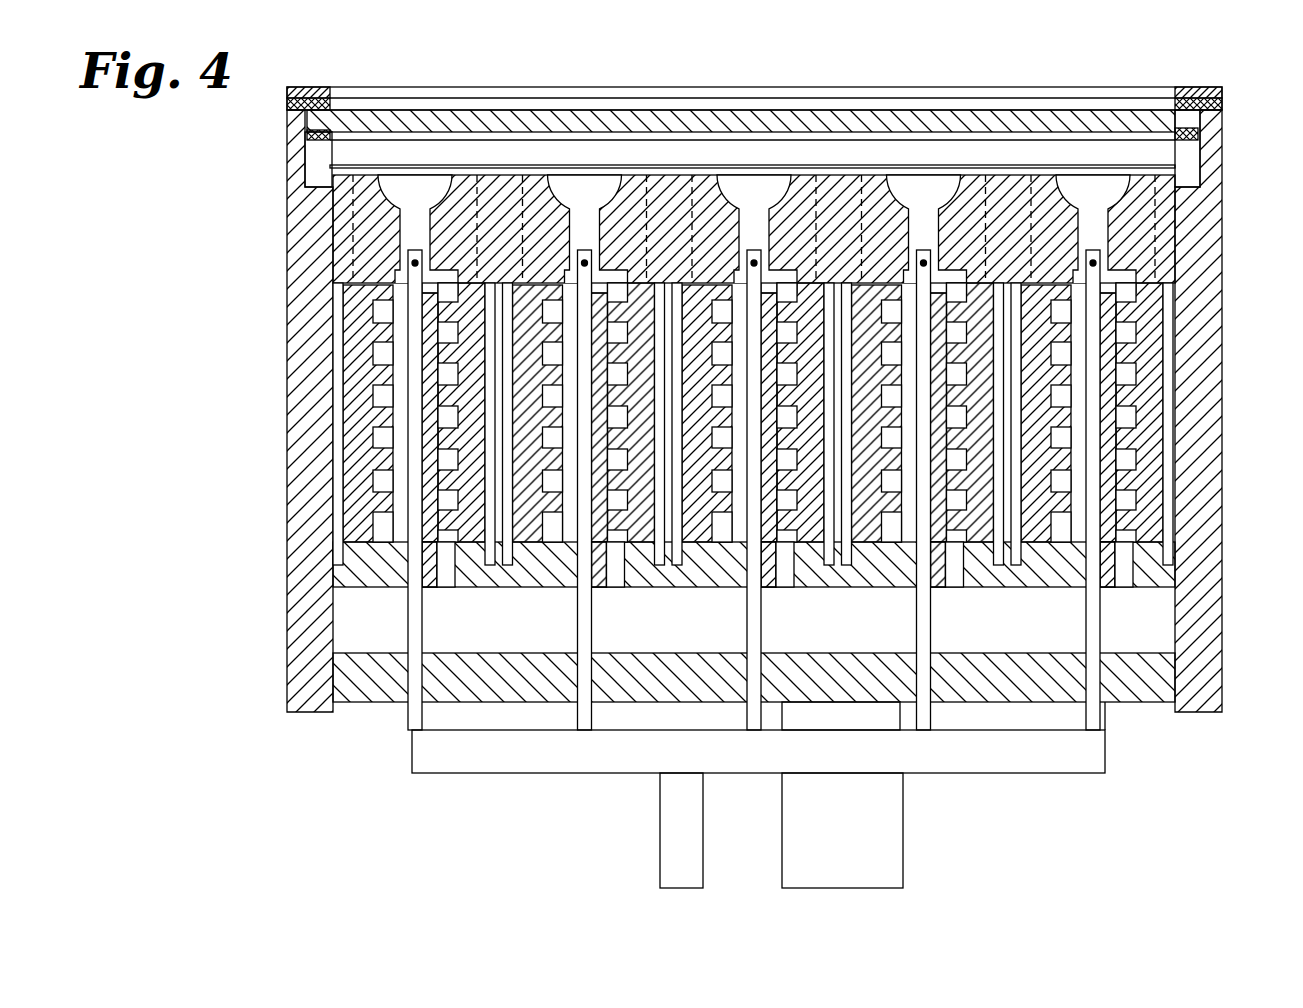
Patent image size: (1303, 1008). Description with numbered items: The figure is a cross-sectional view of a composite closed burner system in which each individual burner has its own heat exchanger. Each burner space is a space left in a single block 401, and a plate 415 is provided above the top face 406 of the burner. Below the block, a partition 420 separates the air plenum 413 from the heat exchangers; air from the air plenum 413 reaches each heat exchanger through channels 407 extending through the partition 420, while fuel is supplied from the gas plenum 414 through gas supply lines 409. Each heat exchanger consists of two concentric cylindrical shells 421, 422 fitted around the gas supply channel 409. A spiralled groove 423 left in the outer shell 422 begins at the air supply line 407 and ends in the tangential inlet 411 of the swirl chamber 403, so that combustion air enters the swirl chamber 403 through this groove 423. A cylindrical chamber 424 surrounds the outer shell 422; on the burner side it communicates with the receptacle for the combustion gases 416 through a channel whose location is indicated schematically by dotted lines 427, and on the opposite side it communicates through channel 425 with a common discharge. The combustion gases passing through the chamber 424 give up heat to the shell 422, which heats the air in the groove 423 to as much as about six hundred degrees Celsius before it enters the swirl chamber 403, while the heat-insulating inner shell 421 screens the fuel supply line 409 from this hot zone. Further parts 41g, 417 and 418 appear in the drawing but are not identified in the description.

The block 401 is at (365, 195).
The plate 415 is at (418, 117).
The top face 406 is at (823, 173).
The receptacle for the combustion gases 416 is at (775, 164).
The dotted lines 427 is at (337, 214).
The swirl chamber 403 is at (1130, 272).
The tangential inlet 411 is at (1130, 292).
The spiralled groove 423 is at (1060, 352).
The housing wall 41g is at (340, 438).
The cylindrical chamber 424 is at (1018, 447).
The cylindrical shell 421 is at (1112, 482).
The outer shell 422 is at (1155, 517).
The channel 425 is at (1168, 550).
The air plenum 413 is at (520, 630).
The partition 420 is at (700, 578).
The channels 407 is at (783, 573).
The gas supply lines 409 is at (1093, 712).
The gas plenum 414 is at (765, 762).
The small pipe 418 is at (660, 833).
The pipe 417 is at (903, 832).